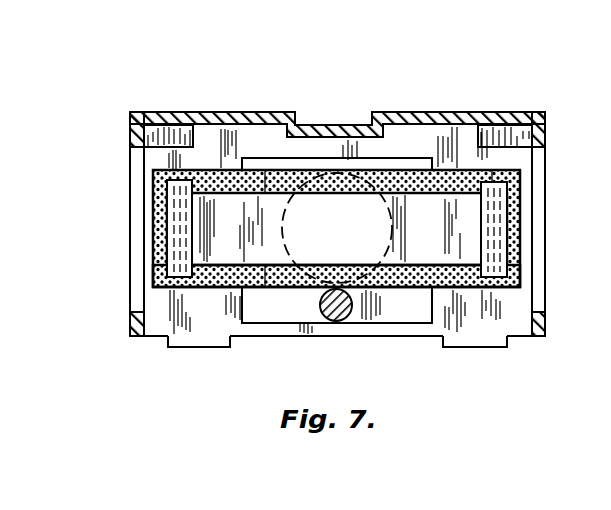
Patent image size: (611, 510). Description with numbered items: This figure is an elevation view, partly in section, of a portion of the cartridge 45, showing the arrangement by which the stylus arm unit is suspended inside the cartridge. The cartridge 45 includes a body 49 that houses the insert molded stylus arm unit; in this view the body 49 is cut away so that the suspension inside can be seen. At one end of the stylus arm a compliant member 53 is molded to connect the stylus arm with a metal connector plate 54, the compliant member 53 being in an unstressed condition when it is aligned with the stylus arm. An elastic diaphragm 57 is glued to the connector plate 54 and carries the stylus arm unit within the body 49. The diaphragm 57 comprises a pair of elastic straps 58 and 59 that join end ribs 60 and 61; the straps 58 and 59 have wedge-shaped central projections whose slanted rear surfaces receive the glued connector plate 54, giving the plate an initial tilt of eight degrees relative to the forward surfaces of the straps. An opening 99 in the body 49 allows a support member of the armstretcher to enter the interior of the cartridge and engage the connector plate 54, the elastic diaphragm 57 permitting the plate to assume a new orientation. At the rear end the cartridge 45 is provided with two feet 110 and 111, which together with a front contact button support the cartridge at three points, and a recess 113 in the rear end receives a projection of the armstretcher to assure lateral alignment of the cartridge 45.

The cartridge 45 is at (122, 200).
The body 49 is at (440, 112).
The compliant member 53 is at (318, 317).
The connector plate 54 is at (382, 312).
The elastic diaphragm 57 is at (226, 302).
The elastic strap 58 is at (334, 187).
The elastic strap 59 is at (343, 268).
The end rib 60 is at (167, 278).
The end rib 61 is at (520, 280).
The opening 99 is at (314, 249).
The foot 110 is at (182, 348).
The foot 111 is at (487, 349).
The recess 113 is at (338, 125).